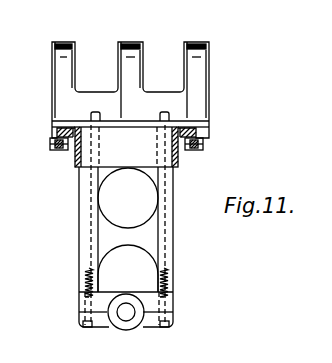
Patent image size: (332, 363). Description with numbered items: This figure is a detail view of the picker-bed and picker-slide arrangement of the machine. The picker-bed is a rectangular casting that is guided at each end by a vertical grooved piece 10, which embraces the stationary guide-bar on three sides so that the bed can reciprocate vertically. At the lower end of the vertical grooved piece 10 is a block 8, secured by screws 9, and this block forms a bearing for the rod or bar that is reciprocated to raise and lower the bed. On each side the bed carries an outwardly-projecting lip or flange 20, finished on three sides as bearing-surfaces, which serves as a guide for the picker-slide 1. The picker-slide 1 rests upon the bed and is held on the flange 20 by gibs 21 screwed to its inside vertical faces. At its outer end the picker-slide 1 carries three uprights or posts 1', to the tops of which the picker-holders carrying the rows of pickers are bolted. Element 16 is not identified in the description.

The picker-slide 1 is at (130, 84).
The uprights or posts 1' is at (139, 80).
The lip or flange 20 is at (200, 134).
The gibs 21 is at (63, 151).
The vertical grooved pieces 10 is at (174, 237).
The blocks 8 is at (170, 305).
The screws 9 is at (170, 323).
The feet 16 is at (88, 328).